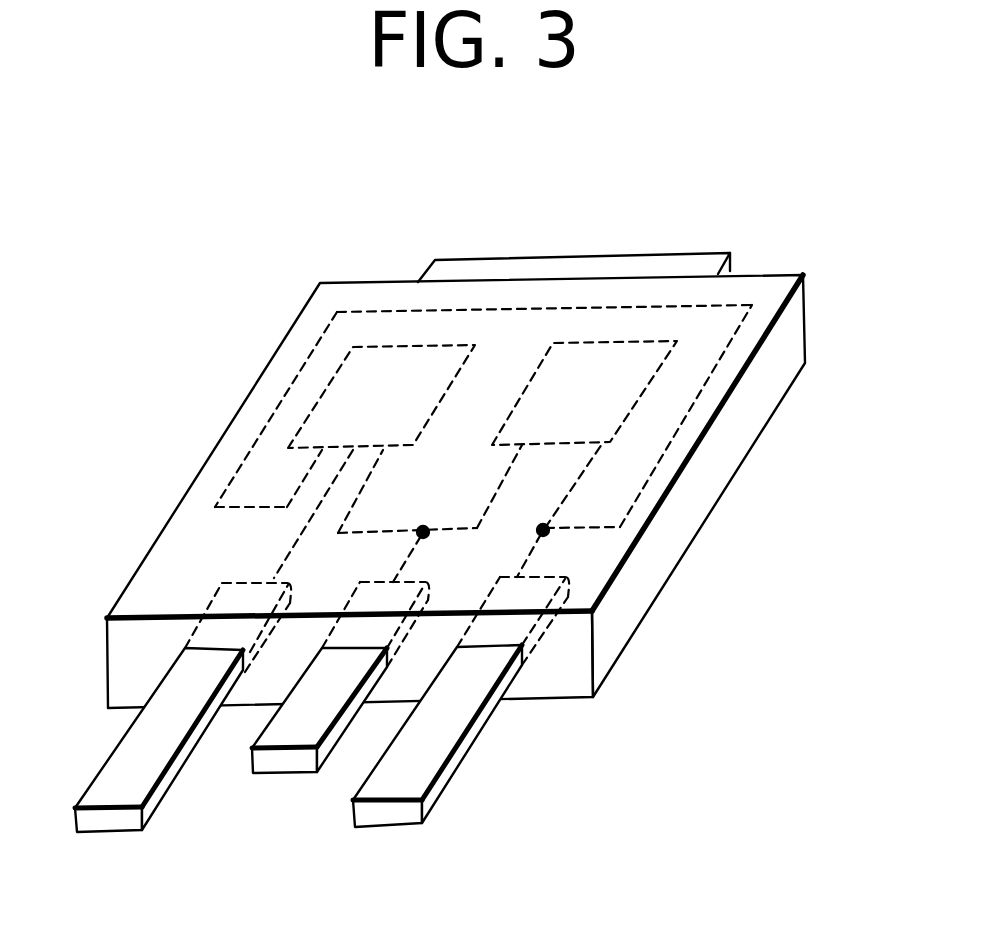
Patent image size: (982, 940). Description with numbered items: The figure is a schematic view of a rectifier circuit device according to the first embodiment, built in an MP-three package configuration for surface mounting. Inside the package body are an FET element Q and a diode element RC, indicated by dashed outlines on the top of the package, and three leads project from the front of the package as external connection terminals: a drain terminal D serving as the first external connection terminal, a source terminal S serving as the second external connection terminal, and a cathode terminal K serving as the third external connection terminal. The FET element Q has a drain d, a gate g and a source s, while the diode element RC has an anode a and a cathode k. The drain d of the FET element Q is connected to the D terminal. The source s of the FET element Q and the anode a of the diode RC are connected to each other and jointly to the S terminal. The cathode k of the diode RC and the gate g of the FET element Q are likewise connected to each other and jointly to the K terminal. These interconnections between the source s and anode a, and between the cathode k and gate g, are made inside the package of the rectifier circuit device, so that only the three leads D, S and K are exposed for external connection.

The FET element Q is at (457, 422).
The diode element RC is at (677, 421).
The drain d is at (381, 396).
The gate g is at (251, 483).
The source s is at (430, 492).
The anode a is at (571, 416).
The cathode k is at (579, 490).
The drain terminal D is at (107, 818).
The source terminal S is at (287, 760).
The cathode terminal K is at (388, 808).